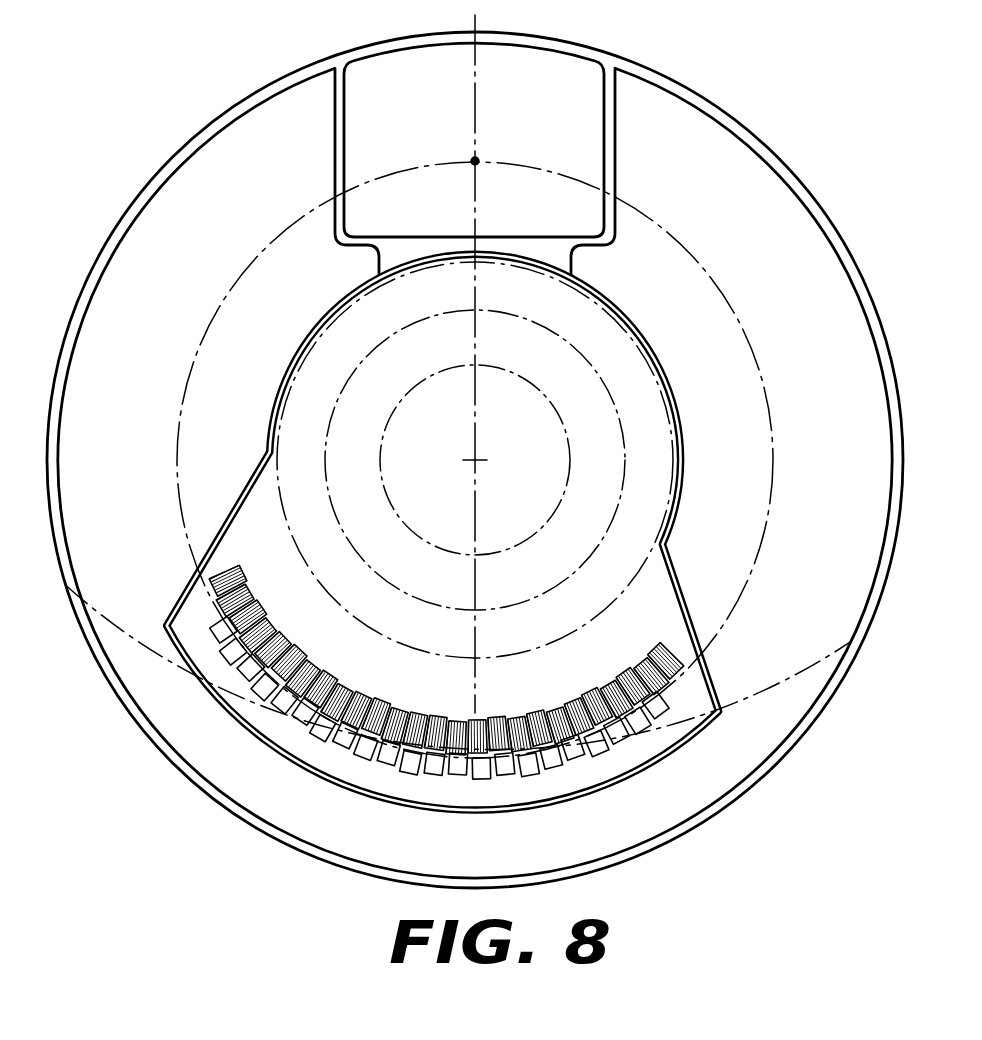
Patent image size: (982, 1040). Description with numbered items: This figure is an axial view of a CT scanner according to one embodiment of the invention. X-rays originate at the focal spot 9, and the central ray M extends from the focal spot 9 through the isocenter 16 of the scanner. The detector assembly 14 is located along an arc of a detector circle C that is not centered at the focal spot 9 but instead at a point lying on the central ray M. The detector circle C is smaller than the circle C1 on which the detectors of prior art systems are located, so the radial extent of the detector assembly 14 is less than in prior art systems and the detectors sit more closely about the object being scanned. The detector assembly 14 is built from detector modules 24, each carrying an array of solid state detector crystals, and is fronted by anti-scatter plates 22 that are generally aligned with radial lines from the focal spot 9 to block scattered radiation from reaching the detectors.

The focal spot 9 is at (478, 160).
The detector assembly 14 is at (655, 749).
The isocenter 16 is at (479, 457).
The anti-scatter plates 22 is at (540, 720).
The detector module 24 is at (384, 766).
The detector circle C is at (383, 483).
The prior art detector circle C1 is at (112, 628).
The central ray M is at (477, 510).